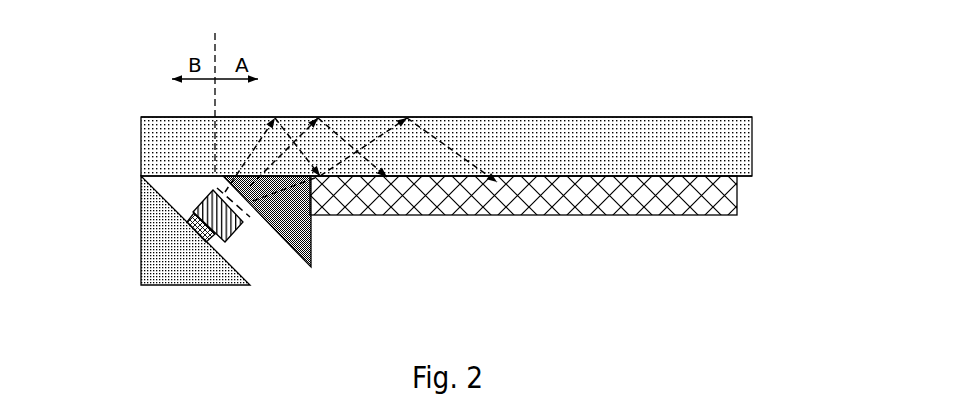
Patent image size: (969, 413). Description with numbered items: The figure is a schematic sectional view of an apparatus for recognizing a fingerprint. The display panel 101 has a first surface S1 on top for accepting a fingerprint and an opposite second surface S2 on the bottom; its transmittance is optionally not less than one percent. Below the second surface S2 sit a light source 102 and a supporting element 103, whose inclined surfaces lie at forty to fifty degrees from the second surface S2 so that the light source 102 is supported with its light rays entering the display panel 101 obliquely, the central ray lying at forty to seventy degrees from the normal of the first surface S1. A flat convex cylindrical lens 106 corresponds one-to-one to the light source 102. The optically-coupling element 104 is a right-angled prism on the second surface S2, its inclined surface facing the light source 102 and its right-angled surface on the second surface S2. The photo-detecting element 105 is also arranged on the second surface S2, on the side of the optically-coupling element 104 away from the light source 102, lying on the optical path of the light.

The display panel 101 is at (718, 142).
The light source 102 is at (205, 231).
The supporting element 103 is at (158, 237).
The optically-coupling element 104 is at (310, 235).
The photo-detecting element 105 is at (435, 200).
The flat convex cylindrical lens 106 is at (233, 230).
The first surface S1 is at (620, 117).
The second surface S2 is at (713, 177).